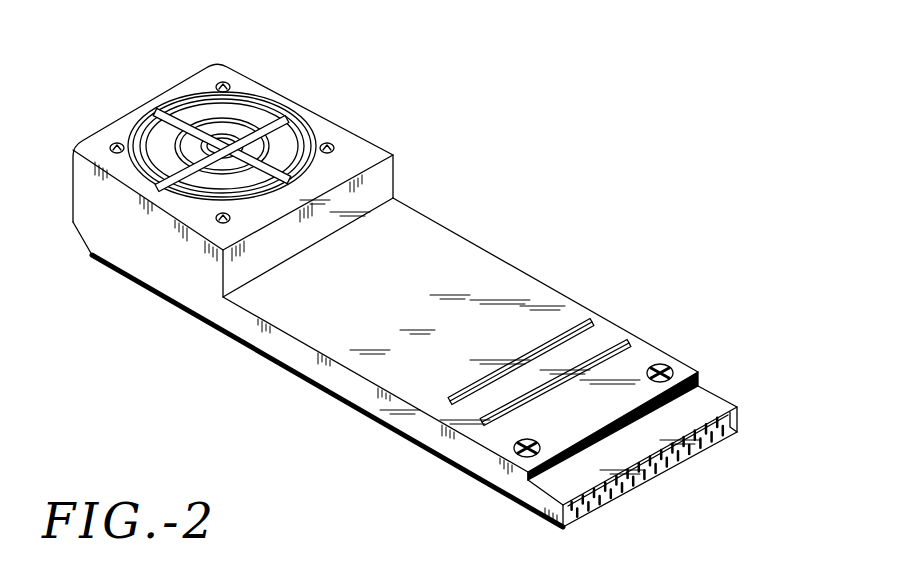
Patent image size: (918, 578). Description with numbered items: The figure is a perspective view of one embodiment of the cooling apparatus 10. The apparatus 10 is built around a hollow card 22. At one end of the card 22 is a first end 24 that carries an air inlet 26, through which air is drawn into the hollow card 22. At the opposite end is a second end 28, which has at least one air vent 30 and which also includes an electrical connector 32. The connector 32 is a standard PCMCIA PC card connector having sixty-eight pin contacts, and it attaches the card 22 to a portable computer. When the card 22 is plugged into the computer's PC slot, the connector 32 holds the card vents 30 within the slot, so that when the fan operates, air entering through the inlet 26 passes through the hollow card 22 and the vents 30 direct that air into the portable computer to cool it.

The cooling apparatus 10 is at (514, 130).
The hollow card 22 is at (463, 257).
The first end 24 is at (153, 265).
The air inlet 26 is at (183, 95).
The second end 28 is at (688, 368).
The air vent 30 is at (591, 322).
The electrical connector 32 is at (635, 493).